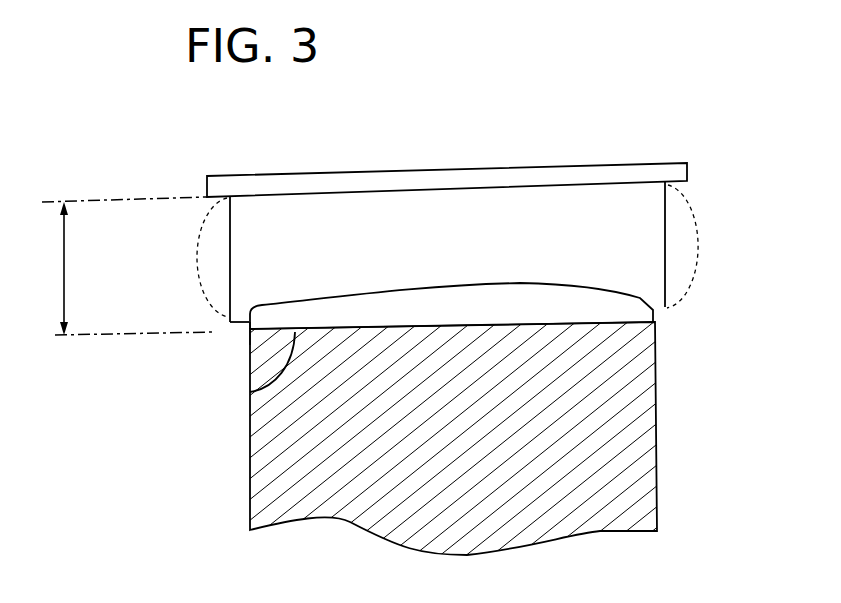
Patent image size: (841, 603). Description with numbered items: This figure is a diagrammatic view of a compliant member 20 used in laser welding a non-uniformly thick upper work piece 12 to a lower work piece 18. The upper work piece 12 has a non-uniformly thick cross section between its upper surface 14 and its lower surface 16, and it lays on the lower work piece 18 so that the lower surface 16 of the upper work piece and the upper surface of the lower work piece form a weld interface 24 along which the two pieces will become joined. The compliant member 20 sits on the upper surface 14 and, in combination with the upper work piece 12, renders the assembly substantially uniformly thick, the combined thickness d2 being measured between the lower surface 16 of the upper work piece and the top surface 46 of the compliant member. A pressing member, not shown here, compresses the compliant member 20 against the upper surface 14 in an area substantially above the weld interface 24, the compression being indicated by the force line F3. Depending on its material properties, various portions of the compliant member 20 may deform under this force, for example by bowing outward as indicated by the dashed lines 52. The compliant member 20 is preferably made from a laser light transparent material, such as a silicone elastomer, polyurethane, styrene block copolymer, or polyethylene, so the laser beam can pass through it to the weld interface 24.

The upper work piece 12 is at (653, 310).
The upper surface 14 is at (268, 305).
The lower surface 16 is at (250, 392).
The lower work piece 18 is at (656, 432).
The compliant member 20 is at (666, 219).
The weld interface 24 is at (248, 332).
The top surface 46 is at (552, 184).
The dashed lines 52 is at (197, 250).
The force line F3 is at (446, 166).
The combined thickness d2 is at (128, 266).